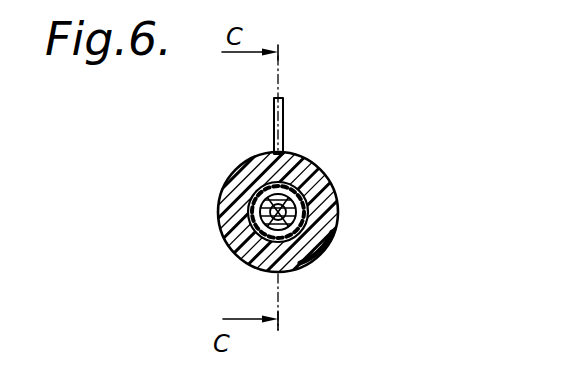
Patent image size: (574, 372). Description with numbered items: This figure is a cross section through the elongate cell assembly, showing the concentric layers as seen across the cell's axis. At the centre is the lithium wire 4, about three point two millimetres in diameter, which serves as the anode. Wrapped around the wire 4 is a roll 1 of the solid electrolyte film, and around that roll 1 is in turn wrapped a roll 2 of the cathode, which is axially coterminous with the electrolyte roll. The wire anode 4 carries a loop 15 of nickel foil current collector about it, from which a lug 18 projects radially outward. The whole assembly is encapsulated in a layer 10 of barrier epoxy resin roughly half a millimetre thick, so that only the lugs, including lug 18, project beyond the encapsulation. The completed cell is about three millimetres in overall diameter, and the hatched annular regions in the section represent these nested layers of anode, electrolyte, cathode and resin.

The roll of solid electrolyte film 1 is at (236, 180).
The roll of cathode 2 is at (242, 212).
The lithium wire 4 is at (306, 205).
The layer of barrier epoxy resin 10 is at (304, 258).
The loop of current collector 15 is at (304, 174).
The lug 18 is at (283, 112).